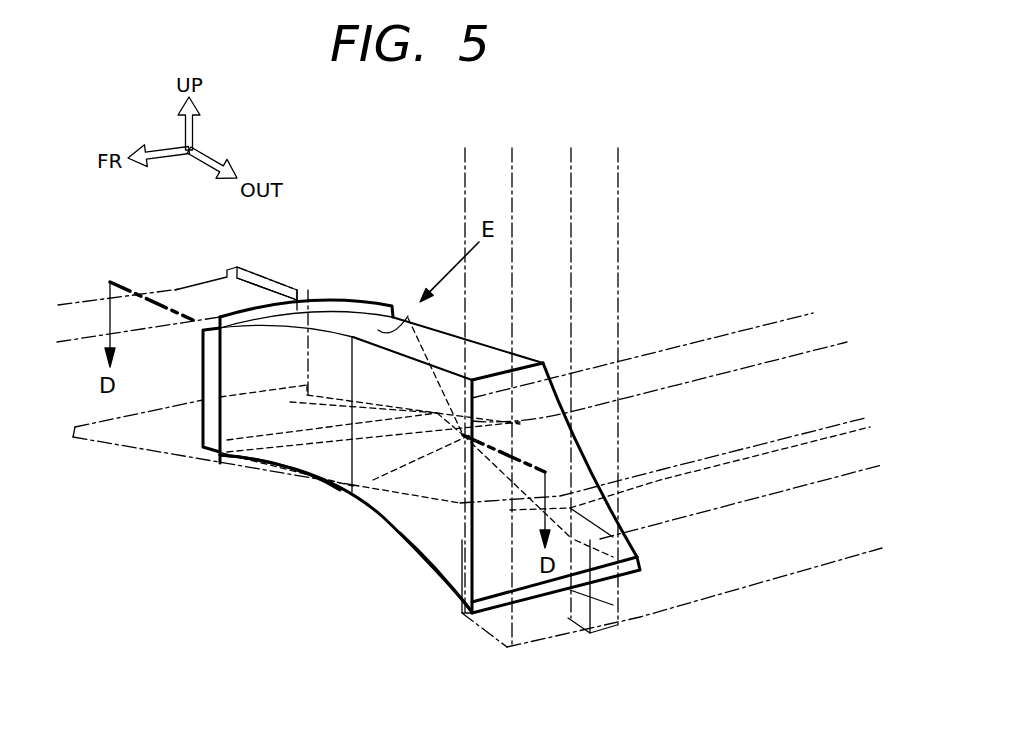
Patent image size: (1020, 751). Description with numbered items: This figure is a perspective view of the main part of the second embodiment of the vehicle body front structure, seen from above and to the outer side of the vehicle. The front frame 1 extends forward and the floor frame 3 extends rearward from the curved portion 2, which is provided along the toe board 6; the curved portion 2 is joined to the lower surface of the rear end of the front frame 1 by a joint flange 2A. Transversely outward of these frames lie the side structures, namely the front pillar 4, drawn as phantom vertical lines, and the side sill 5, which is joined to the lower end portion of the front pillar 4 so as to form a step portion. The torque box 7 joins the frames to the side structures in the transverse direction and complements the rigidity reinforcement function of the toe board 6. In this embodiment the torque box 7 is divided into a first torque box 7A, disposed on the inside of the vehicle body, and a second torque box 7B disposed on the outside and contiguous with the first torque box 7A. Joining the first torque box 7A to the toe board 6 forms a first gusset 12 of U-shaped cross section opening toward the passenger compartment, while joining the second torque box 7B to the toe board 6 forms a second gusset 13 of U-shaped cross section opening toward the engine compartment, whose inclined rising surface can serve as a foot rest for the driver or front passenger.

The front frame 1 is at (110, 442).
The curved portion 2 is at (188, 437).
The joint flange 2A is at (163, 415).
The floor frame 3 is at (728, 345).
The front pillar 4 is at (605, 228).
The side sill 5 is at (715, 580).
The toe board 6 is at (353, 315).
The torque box 7 is at (374, 519).
The first torque box 7A is at (290, 464).
The second torque box 7B is at (440, 588).
The first gusset 12 is at (318, 347).
The second gusset 13 is at (585, 441).